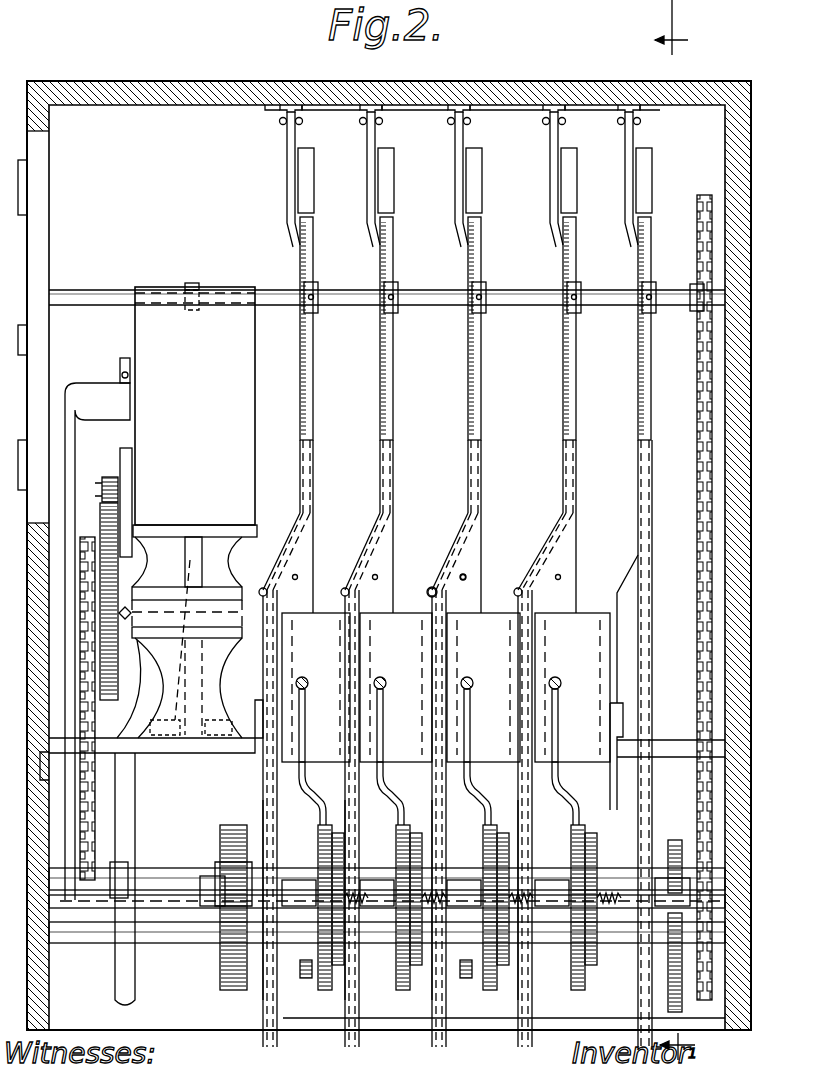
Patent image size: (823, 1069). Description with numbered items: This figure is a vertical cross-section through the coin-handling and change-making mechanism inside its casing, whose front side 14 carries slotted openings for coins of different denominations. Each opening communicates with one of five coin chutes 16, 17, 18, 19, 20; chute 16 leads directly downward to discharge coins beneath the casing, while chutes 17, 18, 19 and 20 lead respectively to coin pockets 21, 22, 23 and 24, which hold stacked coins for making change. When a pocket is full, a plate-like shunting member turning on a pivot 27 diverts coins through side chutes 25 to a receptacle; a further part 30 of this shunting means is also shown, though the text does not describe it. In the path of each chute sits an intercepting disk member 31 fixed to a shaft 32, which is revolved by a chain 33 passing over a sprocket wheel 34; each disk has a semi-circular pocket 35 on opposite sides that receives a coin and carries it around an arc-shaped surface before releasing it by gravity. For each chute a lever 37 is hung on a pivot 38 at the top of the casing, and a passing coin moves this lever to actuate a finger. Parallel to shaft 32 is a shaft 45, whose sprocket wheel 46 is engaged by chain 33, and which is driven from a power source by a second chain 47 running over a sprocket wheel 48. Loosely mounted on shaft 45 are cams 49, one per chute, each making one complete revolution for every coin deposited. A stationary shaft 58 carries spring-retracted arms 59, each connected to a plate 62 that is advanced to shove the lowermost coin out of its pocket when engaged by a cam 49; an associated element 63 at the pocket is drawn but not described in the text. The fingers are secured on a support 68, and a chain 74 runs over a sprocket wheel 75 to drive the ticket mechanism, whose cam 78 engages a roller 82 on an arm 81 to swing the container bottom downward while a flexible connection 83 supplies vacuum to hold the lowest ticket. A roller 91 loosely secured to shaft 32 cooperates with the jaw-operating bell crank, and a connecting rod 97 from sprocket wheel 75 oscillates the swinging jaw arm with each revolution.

The front side of casing 14 is at (384, 555).
The coin chute 16 is at (638, 468).
The coin chute 17 is at (563, 468).
The coin chute 18 is at (468, 468).
The coin chute 19 is at (380, 468).
The coin chute 20 is at (300, 468).
The coin pocket 21 is at (572, 687).
The coin pocket 22 is at (483, 687).
The coin pocket 23 is at (396, 687).
The coin pocket 24 is at (316, 687).
The side chute 25 is at (277, 822).
The pivot 27 is at (466, 578).
The pivot 30 is at (428, 590).
The intercepting disk member 31 is at (390, 275).
The shaft 32 is at (600, 290).
The chain 33 is at (700, 425).
The sprocket wheel 34 is at (697, 252).
The semi-circular pocket 35 is at (560, 355).
The lever 37 is at (636, 192).
The pivot 38 is at (653, 128).
The shaft 45 is at (369, 882).
The sprocket wheel 46 is at (676, 858).
The second chain 47 is at (683, 988).
The sprocket wheel 48 is at (666, 852).
The cam 49 is at (318, 853).
The stationary shaft 58 is at (290, 952).
The arm 59 is at (378, 712).
The plate 62 is at (405, 770).
The tube 63 is at (578, 768).
The support 68 is at (165, 898).
The chain 74 is at (82, 806).
The sprocket wheel 75 is at (100, 530).
The cam 78 is at (105, 665).
The arm 81 is at (132, 468).
The roller 82 is at (112, 480).
The flexible connection 83 is at (136, 978).
The roller 91 is at (200, 287).
The connecting rod 97 is at (75, 462).